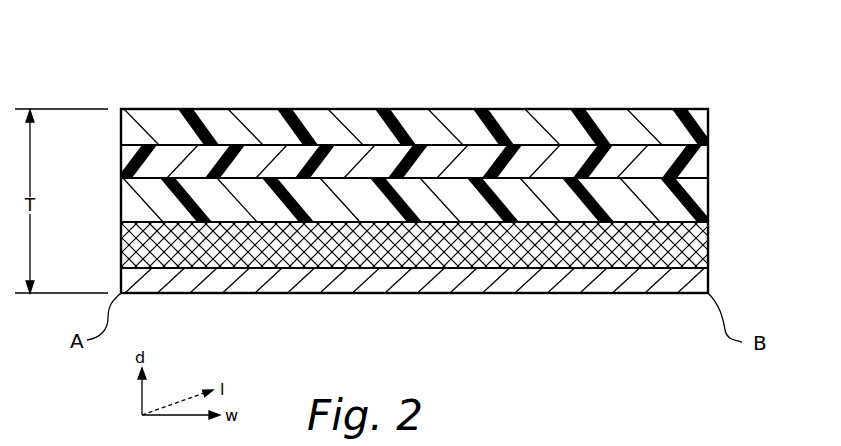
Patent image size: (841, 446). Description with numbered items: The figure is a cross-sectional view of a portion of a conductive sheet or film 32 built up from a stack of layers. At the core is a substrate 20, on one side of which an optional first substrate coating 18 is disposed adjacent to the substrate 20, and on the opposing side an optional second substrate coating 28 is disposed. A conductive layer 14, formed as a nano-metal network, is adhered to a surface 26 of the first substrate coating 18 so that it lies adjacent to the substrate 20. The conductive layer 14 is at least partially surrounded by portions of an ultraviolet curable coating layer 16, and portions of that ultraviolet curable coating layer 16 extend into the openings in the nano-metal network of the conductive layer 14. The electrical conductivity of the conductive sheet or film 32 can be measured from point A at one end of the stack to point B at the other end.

The conductive sheet or film 32 is at (164, 81).
The second substrate coating 28 is at (410, 109).
The substrate 20 is at (528, 163).
The first substrate coating 18 is at (607, 203).
The surface 26 is at (383, 226).
The conductive layer 14 is at (322, 238).
The ultraviolet curable coating layer 16 is at (524, 275).